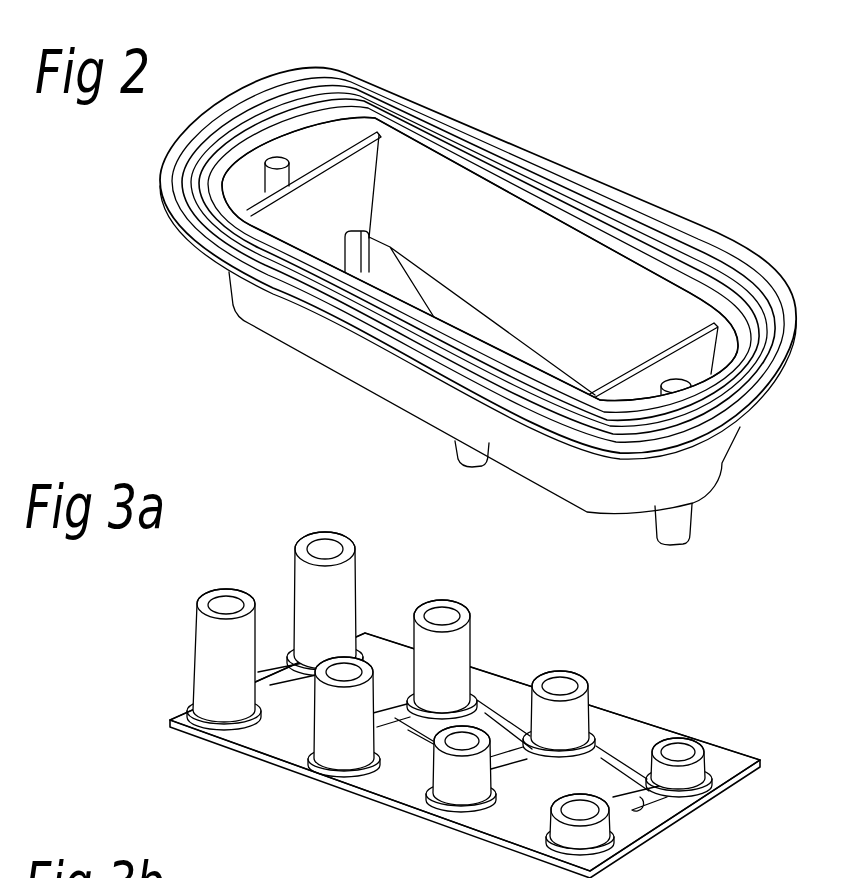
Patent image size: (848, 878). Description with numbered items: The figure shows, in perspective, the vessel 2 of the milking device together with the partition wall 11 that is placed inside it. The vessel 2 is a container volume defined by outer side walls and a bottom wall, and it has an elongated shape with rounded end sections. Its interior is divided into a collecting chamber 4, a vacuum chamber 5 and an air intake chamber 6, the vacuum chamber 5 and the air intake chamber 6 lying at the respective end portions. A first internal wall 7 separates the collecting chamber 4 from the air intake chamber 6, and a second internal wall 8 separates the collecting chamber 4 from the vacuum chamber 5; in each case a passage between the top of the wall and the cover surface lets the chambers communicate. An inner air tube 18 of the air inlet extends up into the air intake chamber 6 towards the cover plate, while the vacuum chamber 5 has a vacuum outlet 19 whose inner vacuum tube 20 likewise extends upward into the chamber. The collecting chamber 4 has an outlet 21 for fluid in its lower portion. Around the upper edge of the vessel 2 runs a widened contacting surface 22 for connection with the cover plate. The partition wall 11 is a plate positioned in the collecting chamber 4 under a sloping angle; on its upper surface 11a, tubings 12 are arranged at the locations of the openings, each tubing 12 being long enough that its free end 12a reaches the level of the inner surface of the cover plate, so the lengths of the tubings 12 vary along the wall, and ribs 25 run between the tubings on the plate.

In FIG. 2, the vessel 2 is at (598, 495).
In FIG. 2, the collecting chamber 4 is at (524, 268).
In FIG. 2, the vacuum chamber 5 is at (700, 381).
In FIG. 2, the air intake chamber 6 is at (311, 146).
In FIG. 2, the first internal wall 7 is at (360, 185).
In FIG. 2, the second internal wall 8 is at (704, 366).
In FIG. 2, the inner air tube 18 is at (270, 178).
In FIG. 2, the vacuum outlet 19 is at (678, 520).
In FIG. 2, the inner vacuum tube 20 is at (693, 380).
In FIG. 2, the outlet 21 is at (463, 457).
In FIG. 2, the widened contacting surface 22 is at (347, 295).
In FIG. 3A, the partition wall 11 is at (530, 832).
In FIG. 3A, the upper surface 11a is at (607, 758).
In FIG. 3A, the tubing 12 is at (327, 738).
In FIG. 3A, the free end 12a is at (303, 544).
In FIG. 3A, the connecting rib 25 is at (643, 803).